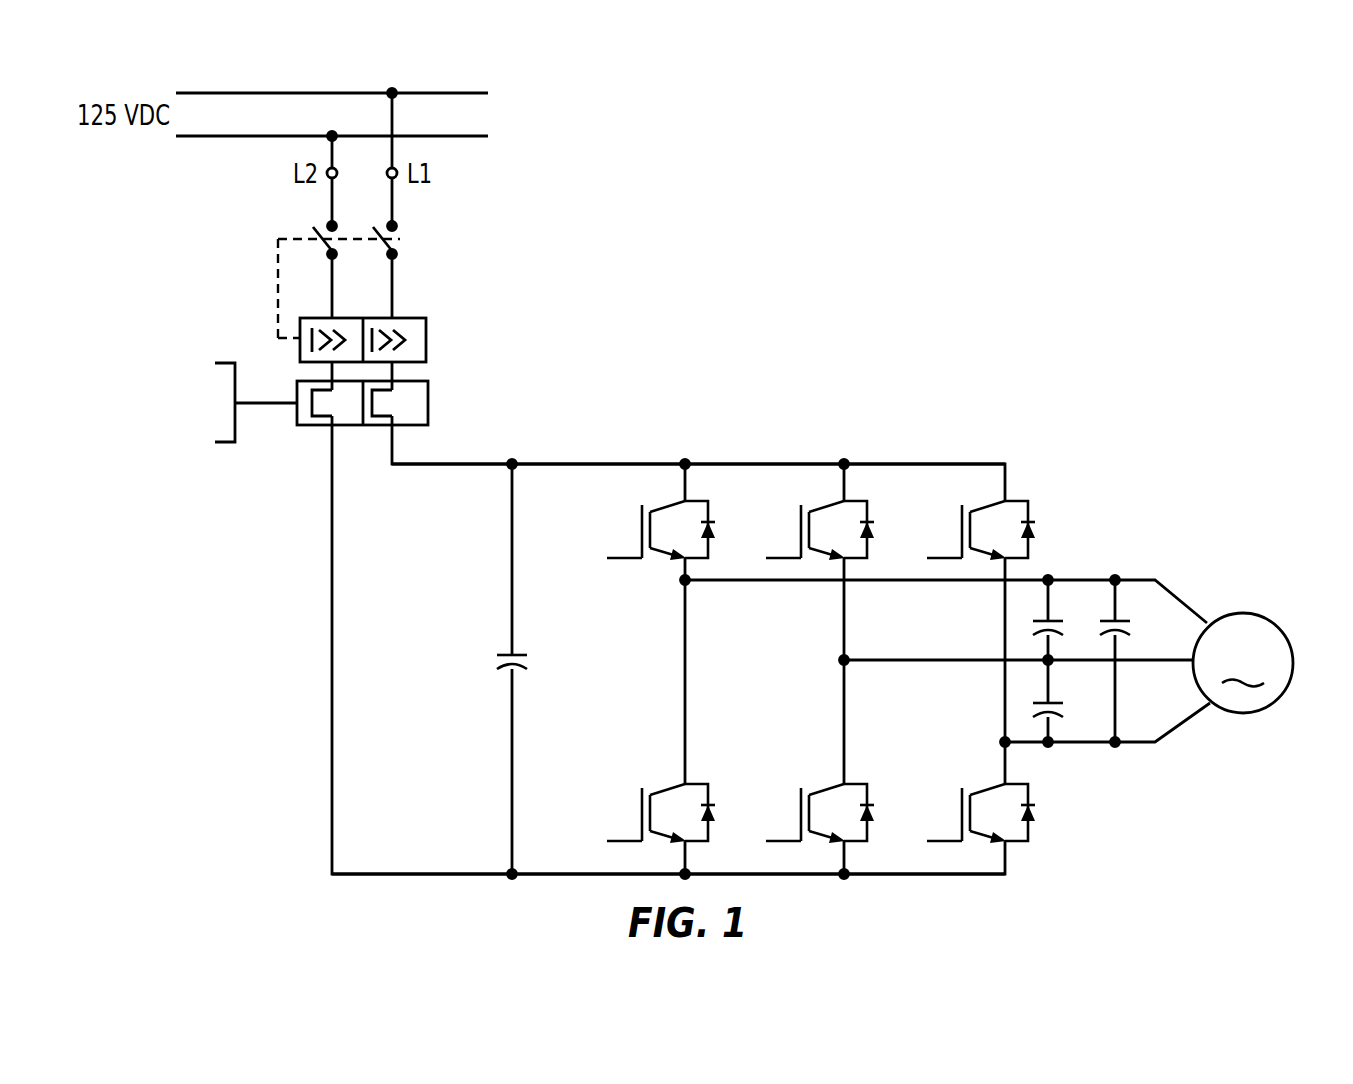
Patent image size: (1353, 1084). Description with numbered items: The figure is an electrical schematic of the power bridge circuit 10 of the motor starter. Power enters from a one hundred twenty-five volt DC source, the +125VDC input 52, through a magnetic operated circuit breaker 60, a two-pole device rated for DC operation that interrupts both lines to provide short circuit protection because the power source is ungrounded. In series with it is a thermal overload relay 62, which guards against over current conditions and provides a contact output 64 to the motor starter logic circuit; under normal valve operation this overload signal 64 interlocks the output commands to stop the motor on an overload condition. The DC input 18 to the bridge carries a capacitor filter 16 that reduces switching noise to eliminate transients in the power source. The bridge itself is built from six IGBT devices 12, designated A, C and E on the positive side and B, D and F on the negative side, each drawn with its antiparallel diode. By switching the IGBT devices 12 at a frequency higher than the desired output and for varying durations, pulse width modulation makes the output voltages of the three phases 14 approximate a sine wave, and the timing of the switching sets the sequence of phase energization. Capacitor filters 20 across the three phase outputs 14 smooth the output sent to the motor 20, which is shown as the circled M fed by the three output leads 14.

The power bridge circuit 10 is at (767, 679).
The IGBT device 12 is at (837, 666).
The three phase output 14 is at (953, 668).
The capacitor filter 16 is at (530, 663).
The DC input 18 is at (375, 460).
The capacitor filter 20 is at (1164, 661).
The +125VDC input 52 is at (374, 214).
The magnetic operated circuit breaker 60 is at (410, 238).
The thermal overload relay 62 is at (427, 338).
The contact output 64 is at (243, 400).